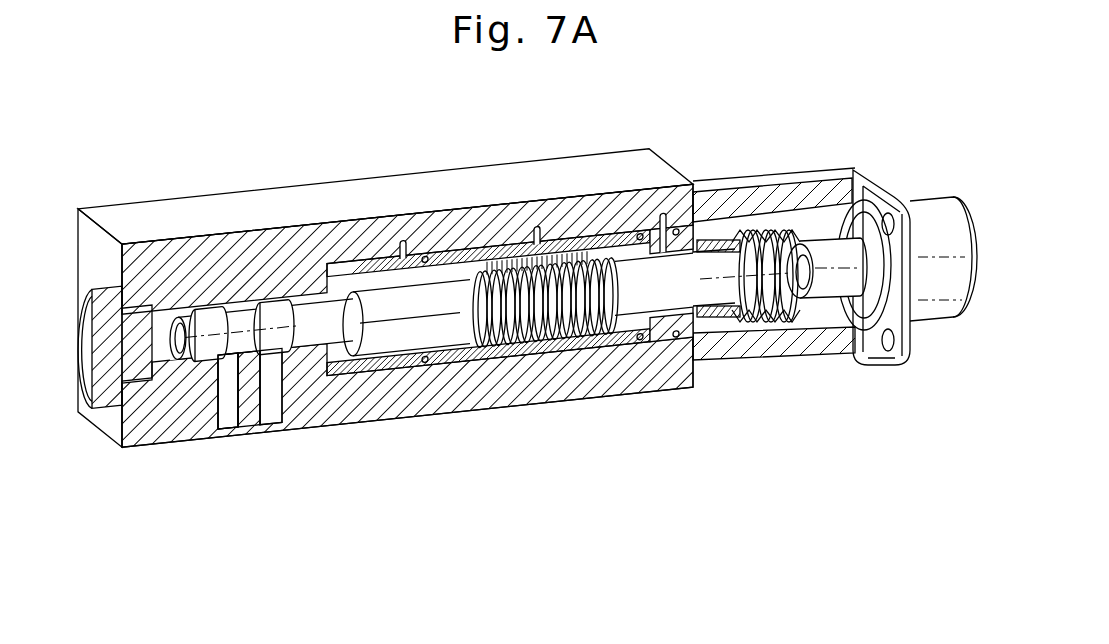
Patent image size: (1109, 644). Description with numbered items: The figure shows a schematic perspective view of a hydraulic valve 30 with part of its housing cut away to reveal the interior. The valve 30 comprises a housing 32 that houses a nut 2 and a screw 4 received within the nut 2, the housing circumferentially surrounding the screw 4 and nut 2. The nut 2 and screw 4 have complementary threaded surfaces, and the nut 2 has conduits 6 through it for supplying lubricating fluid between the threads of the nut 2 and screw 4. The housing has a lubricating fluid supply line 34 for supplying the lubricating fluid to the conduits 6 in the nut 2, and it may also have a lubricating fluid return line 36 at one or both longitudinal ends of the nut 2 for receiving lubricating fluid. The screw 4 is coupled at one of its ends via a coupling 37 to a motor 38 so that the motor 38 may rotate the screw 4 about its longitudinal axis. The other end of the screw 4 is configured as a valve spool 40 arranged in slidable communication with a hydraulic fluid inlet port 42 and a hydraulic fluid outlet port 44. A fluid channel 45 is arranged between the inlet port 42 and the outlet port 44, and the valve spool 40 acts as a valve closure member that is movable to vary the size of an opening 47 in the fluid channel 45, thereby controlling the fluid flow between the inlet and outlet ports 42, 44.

The nut 2 is at (638, 356).
The screw 4 is at (437, 340).
The conduits 6 is at (513, 256).
The hydraulic valve 30 is at (772, 134).
The housing 32 is at (222, 268).
The lubricating fluid supply line 34 is at (537, 228).
The lubricating fluid return line 36 is at (403, 242).
The coupling 37 is at (781, 330).
The motor 38 is at (933, 212).
The valve spool 40 is at (190, 358).
The hydraulic fluid inlet port 42 is at (232, 424).
The hydraulic fluid outlet port 44 is at (270, 421).
The fluid channel 45 is at (227, 395).
The opening 47 is at (230, 357).